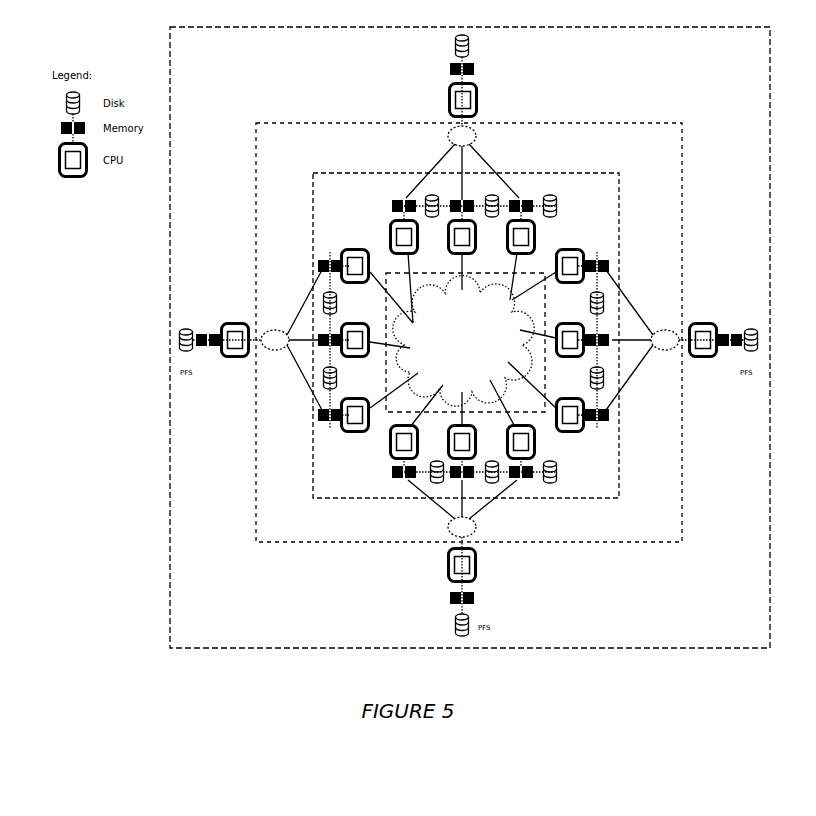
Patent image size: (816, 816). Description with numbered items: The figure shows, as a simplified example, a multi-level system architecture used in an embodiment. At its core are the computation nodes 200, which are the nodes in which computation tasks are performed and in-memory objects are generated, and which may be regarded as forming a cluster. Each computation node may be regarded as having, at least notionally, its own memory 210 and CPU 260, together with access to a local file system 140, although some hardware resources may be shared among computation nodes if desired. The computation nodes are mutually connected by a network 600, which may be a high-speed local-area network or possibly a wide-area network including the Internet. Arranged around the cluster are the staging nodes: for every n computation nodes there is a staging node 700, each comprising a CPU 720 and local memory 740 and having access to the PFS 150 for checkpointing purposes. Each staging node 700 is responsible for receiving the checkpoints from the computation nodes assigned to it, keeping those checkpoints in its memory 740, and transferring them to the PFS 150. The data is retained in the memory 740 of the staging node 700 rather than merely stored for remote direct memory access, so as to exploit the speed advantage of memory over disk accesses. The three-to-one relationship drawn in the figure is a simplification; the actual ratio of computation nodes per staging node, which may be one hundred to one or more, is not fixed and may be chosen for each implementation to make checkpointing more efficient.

The PFS 150 is at (486, 46).
The local memory 740 is at (481, 67).
The CPU 720 is at (481, 100).
The network 600 is at (453, 141).
The staging node 700 is at (470, 337).
The computation nodes 200 is at (480, 325).
The local file system 140 is at (441, 197).
The memory 210 is at (388, 206).
The CPU 260 is at (389, 237).